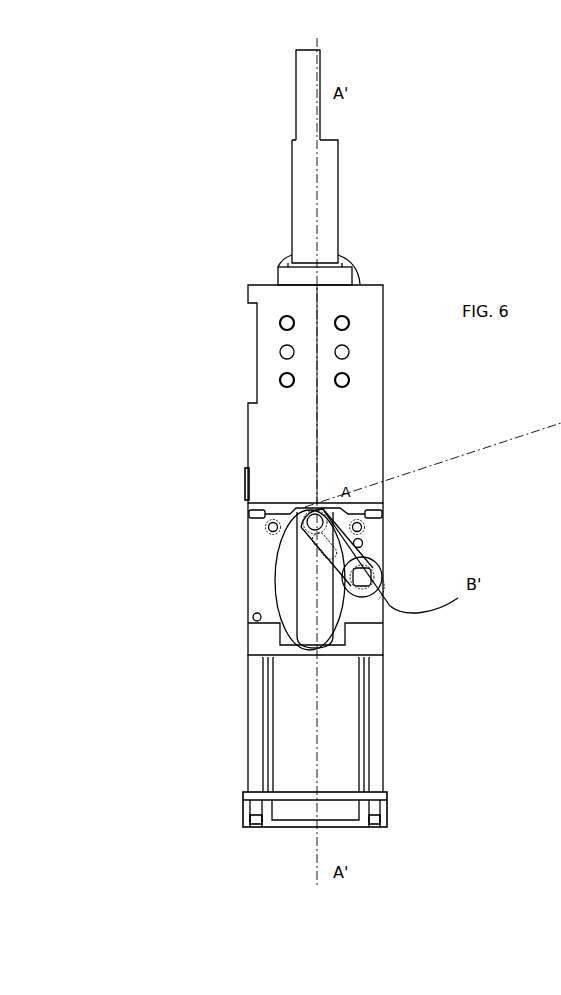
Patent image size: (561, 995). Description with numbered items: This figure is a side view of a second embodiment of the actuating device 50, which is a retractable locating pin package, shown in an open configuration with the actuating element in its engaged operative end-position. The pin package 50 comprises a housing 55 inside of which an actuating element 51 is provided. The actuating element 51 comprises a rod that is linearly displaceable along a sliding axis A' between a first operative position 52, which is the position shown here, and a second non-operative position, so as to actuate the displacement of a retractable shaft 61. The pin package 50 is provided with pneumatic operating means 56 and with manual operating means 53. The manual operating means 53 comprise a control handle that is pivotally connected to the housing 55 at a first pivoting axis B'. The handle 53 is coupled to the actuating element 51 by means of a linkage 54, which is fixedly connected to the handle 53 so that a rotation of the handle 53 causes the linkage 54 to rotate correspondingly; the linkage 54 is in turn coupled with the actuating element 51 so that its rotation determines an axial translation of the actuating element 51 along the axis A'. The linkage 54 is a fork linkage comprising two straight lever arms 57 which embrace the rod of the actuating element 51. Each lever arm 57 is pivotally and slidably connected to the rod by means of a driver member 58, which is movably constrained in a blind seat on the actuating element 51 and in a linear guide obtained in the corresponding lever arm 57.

The actuating device 50 is at (417, 753).
The actuating element 51 is at (308, 607).
The first operative position 52 is at (285, 560).
The manual operating means 53 is at (360, 283).
The linkage 54 is at (375, 532).
The housing 55 is at (257, 453).
The pneumatic operating means 56 is at (255, 717).
The lever arm 57 is at (362, 578).
The driver member 58 is at (314, 516).
The retractable shaft 61 is at (305, 175).